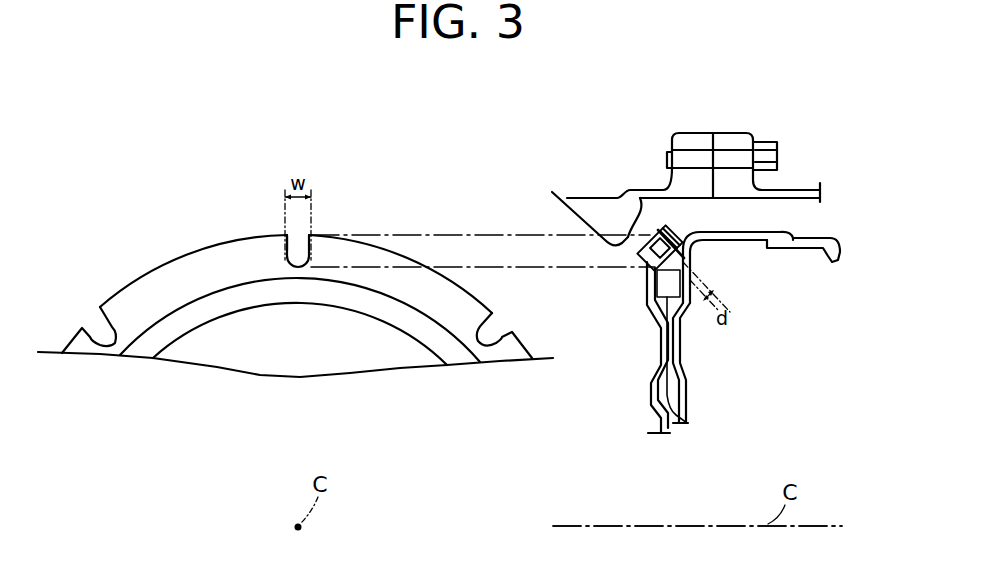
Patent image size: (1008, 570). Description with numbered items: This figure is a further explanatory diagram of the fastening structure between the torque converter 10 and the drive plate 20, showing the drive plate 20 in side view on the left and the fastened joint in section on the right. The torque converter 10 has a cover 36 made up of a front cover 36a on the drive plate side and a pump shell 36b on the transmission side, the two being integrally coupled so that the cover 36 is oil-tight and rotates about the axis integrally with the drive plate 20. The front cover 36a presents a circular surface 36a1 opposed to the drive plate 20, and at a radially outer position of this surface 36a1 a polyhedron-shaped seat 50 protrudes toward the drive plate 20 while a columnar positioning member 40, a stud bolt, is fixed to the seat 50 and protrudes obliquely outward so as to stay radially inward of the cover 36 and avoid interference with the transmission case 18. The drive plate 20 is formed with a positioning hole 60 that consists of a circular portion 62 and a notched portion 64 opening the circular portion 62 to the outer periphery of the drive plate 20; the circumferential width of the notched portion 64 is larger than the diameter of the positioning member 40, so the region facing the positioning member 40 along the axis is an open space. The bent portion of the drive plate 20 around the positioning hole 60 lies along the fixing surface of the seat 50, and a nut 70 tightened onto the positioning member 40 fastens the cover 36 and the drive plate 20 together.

The torque converter 10 is at (826, 222).
The transmission case 18 is at (592, 203).
The drive plate 20 is at (381, 224).
The cover 36 is at (754, 327).
The front cover 36a is at (720, 238).
The pump shell 36b is at (803, 270).
The surface 36a1 is at (668, 390).
The positioning member 40 is at (647, 264).
The seat 50 is at (667, 288).
The positioning hole 60 is at (266, 251).
The circular portion 62 is at (316, 258).
The notched portion 64 is at (282, 240).
The nut 70 is at (650, 264).